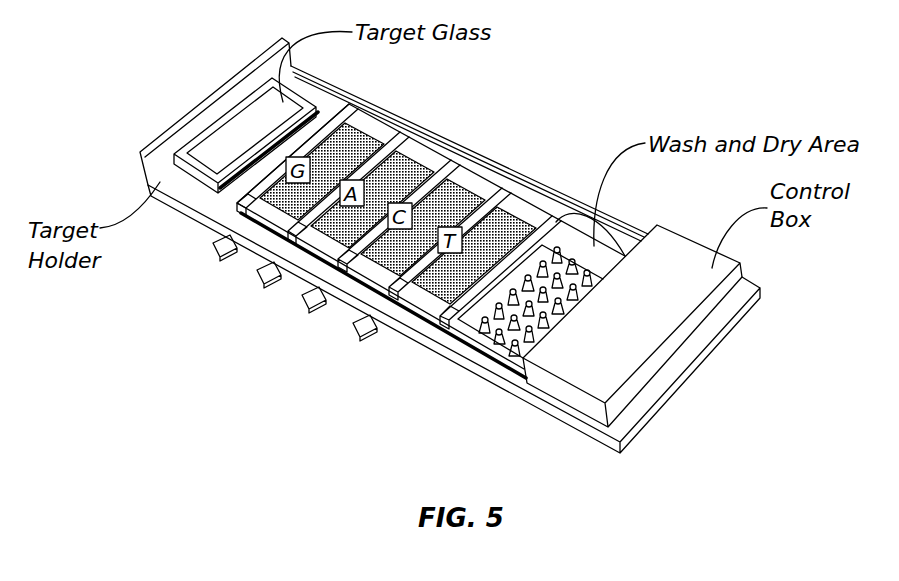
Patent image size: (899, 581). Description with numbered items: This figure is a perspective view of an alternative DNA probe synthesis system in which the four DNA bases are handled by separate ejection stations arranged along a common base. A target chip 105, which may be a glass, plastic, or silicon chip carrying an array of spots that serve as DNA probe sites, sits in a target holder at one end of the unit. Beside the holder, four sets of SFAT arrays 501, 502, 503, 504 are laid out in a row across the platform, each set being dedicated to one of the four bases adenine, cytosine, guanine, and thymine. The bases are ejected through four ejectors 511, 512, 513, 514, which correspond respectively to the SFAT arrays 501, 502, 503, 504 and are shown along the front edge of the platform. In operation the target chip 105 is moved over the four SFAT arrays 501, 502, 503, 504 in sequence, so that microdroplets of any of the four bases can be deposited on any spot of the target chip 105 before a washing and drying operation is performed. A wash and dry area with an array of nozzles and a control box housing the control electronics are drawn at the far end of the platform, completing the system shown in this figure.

The target chip 105 is at (290, 100).
The SFAT array 501 is at (362, 125).
The SFAT array 502 is at (410, 150).
The SFAT array 503 is at (457, 176).
The SFAT array 504 is at (512, 202).
The ejector 511 is at (216, 252).
The ejector 512 is at (266, 280).
The ejector 513 is at (312, 306).
The ejector 514 is at (364, 332).